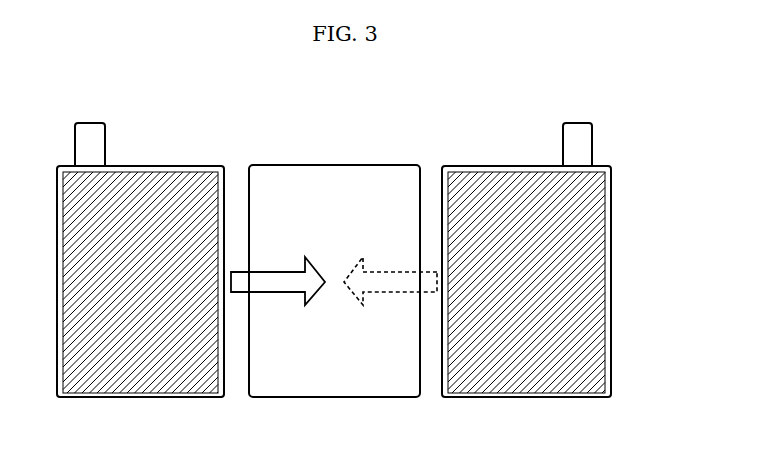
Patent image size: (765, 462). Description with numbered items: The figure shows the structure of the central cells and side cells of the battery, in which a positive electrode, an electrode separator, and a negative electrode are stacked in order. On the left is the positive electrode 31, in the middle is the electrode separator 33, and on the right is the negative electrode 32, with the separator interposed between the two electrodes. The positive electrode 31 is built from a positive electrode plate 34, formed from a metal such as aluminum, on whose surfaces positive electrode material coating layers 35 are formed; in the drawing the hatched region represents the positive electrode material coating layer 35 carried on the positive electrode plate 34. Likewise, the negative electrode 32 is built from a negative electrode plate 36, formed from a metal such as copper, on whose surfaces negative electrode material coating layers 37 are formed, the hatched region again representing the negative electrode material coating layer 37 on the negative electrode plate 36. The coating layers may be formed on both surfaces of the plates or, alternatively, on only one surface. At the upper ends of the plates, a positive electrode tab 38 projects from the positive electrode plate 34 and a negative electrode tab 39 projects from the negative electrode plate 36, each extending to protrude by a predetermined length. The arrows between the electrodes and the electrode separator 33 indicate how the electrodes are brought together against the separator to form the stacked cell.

The positive electrode 31 is at (140, 262).
The negative electrode 32 is at (540, 262).
The electrode separator 33 is at (345, 165).
The positive electrode plate 34 is at (87, 398).
The positive electrode material coating layer 35 is at (145, 382).
The negative electrode plate 36 is at (472, 398).
The negative electrode material coating layer 37 is at (530, 382).
The positive electrode tab 38 is at (88, 123).
The negative electrode tab 39 is at (577, 123).